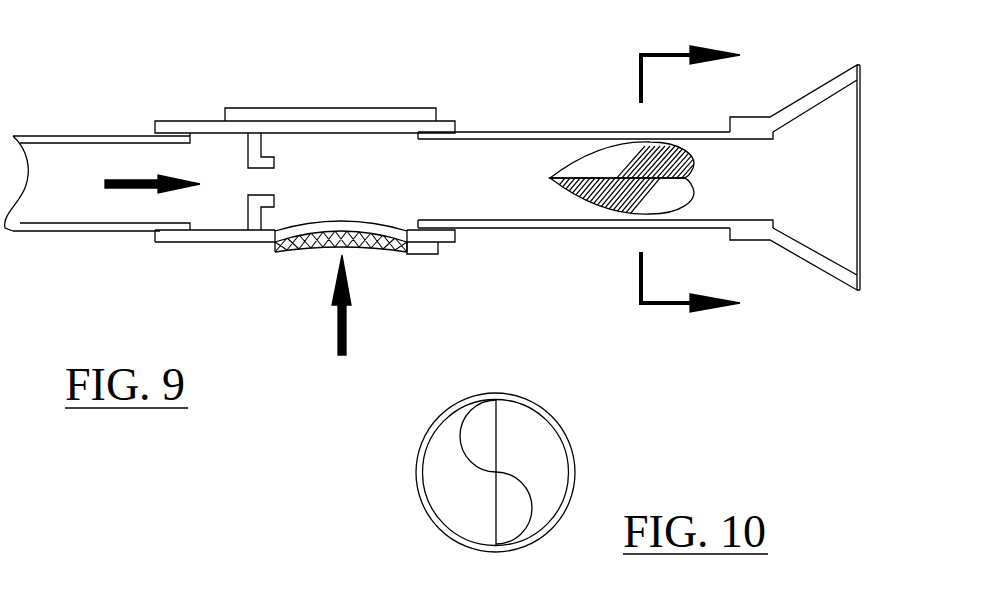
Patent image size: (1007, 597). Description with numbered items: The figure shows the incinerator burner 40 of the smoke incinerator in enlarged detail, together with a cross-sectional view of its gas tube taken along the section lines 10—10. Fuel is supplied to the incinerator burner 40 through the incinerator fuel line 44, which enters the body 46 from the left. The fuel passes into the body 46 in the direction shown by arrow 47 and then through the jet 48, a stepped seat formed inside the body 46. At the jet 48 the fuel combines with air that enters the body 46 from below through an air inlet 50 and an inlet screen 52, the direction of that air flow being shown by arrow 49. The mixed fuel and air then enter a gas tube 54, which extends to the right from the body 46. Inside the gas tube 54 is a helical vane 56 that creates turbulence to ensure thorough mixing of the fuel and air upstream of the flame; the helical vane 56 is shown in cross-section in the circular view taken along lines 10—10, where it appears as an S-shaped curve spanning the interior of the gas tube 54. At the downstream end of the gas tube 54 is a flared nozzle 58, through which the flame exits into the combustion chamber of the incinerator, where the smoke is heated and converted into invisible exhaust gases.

In FIG. 9, the section lines 10— 10 is at (721, 182).
In FIG. 9, the incinerator burner 40 is at (315, 108).
In FIG. 9, the incinerator fuel line 44 is at (110, 137).
In FIG. 9, the body 46 is at (202, 121).
In FIG. 9, the arrow 47 is at (133, 190).
In FIG. 9, the jet 48 is at (263, 184).
In FIG. 9, the arrow 49 is at (338, 320).
In FIG. 9, the air inlet 50 is at (333, 222).
In FIG. 9, the inlet screen 52 is at (385, 252).
In FIG. 9, the gas tube 54 is at (497, 229).
In FIG. 10, the gas tube 54 is at (563, 430).
In FIG. 9, the helical vane 56 is at (612, 168).
In FIG. 10, the helical vane 56 is at (482, 440).
In FIG. 9, the nozzle 58 is at (830, 270).